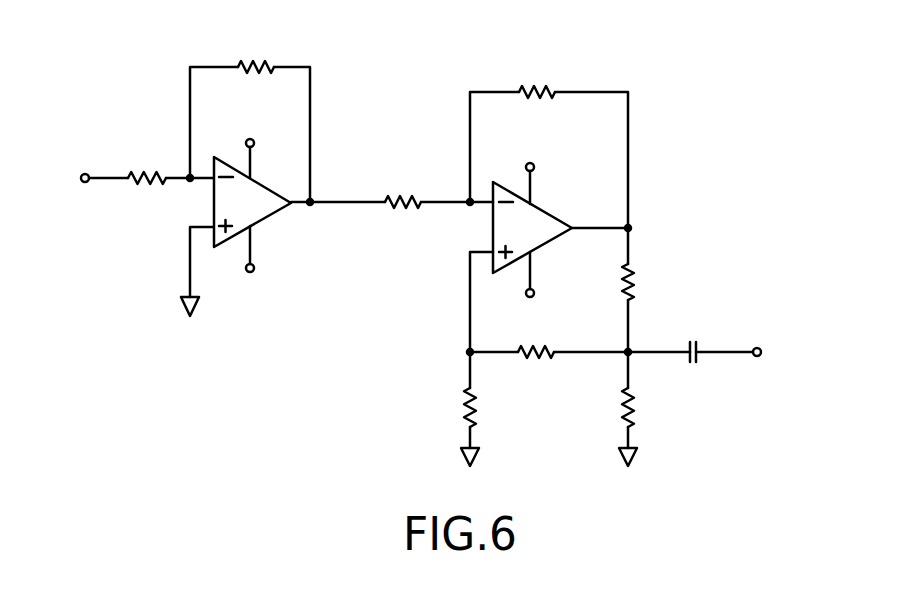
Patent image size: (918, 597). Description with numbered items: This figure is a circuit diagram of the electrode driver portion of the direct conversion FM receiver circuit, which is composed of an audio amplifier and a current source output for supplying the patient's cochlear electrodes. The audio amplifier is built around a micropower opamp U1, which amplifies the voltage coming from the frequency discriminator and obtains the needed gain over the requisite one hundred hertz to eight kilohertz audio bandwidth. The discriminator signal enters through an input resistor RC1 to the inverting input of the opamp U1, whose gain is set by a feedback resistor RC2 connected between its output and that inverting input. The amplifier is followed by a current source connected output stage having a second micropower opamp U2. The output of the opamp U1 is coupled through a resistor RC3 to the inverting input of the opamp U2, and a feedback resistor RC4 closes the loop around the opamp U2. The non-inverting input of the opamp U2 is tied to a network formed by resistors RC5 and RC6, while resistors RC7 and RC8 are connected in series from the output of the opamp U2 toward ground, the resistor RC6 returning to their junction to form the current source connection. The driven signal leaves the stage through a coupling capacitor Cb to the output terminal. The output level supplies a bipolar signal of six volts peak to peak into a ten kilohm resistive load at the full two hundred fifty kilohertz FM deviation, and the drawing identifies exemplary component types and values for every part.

The input resistor 100K RC1 is at (142, 153).
The feedback resistor 3.9M RC2 is at (251, 41).
The coupling resistor 210K RC3 is at (398, 176).
The feedback resistor 43K RC4 is at (535, 69).
The resistor 210K RC5 is at (438, 411).
The resistor 43K RC6 is at (535, 378).
The resistor 300 RC7 is at (657, 282).
The resistor 100K RC8 is at (660, 414).
The output coupling capacitor .22 microfarad Cb is at (710, 349).
The micropower opamp U1 is at (252, 206).
The micropower opamp U2 is at (532, 232).